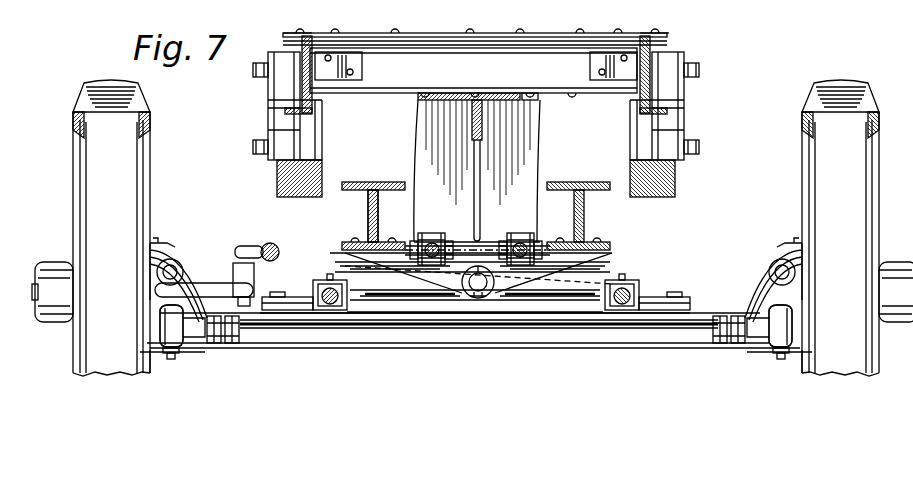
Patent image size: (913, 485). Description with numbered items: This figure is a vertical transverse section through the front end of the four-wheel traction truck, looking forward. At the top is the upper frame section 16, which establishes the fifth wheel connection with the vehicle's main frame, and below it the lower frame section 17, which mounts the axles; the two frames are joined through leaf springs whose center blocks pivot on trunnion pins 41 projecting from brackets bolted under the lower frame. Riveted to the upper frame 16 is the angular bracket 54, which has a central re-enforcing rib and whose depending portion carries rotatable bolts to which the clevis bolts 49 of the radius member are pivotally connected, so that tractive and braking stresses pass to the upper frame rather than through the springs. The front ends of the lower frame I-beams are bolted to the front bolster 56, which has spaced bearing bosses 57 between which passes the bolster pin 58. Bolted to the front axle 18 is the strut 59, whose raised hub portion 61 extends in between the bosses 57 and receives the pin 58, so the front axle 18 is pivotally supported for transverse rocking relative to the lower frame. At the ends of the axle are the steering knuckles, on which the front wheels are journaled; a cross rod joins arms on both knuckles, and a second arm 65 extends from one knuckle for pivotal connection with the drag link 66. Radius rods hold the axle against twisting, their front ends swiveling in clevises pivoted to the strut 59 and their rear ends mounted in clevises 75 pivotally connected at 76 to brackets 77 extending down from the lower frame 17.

The upper frame section 16 is at (395, 93).
The lower frame section 17 is at (385, 175).
The front axle 18 is at (373, 340).
The trunnion pins 41 is at (529, 0).
The clevis bolts 49 is at (517, 238).
The angular bracket 54 is at (541, 105).
The front bolster 56 is at (343, 253).
The bearing bosses 57 is at (469, 298).
The bolster pin 58 is at (480, 298).
The strut 59 is at (580, 285).
The raised hub portion 61 is at (490, 298).
The second arm 65 is at (213, 283).
The drag link 66 is at (280, 230).
The clevises 75 is at (508, 0).
The pivotal connection 76 is at (486, 0).
The brackets 77 is at (466, 0).